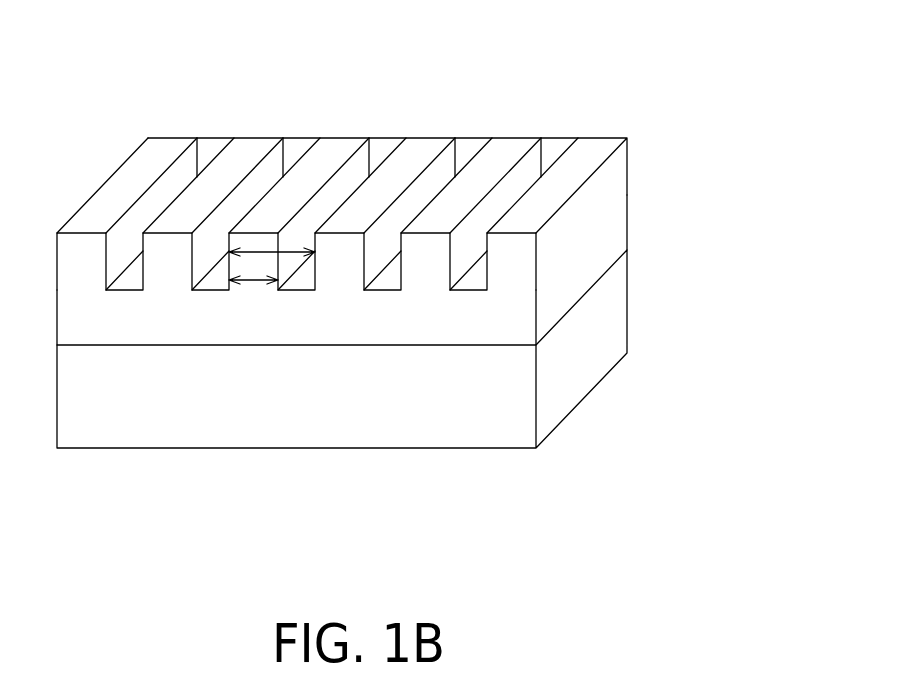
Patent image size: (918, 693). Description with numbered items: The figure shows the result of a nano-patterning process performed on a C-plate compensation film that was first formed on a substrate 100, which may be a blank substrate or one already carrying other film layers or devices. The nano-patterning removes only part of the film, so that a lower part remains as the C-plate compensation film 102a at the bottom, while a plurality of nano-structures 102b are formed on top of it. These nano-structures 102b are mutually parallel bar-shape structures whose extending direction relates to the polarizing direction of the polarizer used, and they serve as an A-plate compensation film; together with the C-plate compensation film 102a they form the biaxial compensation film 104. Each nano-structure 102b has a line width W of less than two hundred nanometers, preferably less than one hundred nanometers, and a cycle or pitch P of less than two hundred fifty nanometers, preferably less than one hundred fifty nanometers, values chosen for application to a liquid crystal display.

The substrate 100 is at (612, 323).
The C-plate compensation film 102a is at (517, 318).
The nano-structures 102b is at (522, 260).
The biaxial compensation film 104 is at (422, 241).
The cycle (pitch) P is at (265, 252).
The line width W is at (252, 285).